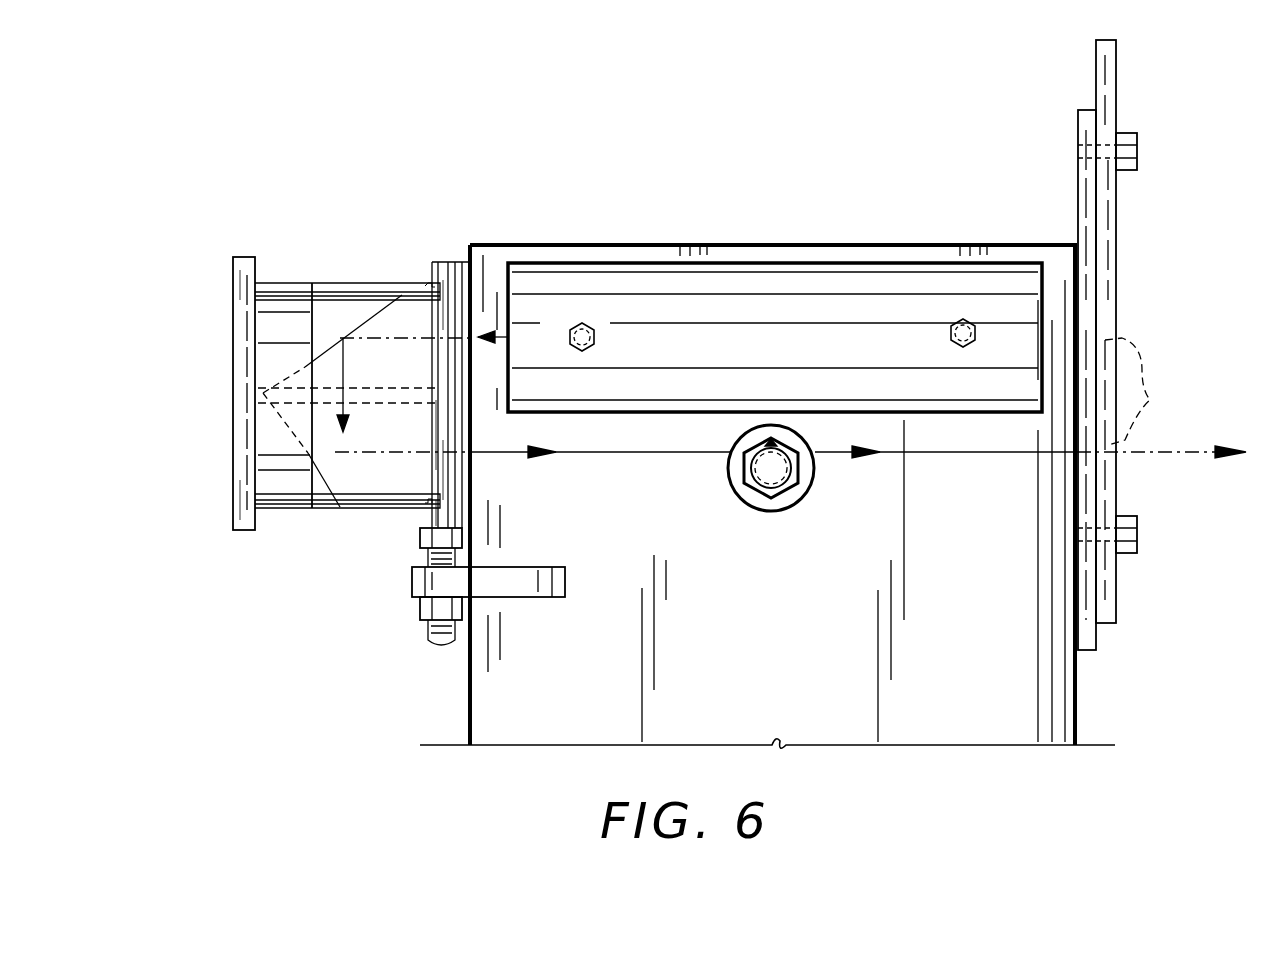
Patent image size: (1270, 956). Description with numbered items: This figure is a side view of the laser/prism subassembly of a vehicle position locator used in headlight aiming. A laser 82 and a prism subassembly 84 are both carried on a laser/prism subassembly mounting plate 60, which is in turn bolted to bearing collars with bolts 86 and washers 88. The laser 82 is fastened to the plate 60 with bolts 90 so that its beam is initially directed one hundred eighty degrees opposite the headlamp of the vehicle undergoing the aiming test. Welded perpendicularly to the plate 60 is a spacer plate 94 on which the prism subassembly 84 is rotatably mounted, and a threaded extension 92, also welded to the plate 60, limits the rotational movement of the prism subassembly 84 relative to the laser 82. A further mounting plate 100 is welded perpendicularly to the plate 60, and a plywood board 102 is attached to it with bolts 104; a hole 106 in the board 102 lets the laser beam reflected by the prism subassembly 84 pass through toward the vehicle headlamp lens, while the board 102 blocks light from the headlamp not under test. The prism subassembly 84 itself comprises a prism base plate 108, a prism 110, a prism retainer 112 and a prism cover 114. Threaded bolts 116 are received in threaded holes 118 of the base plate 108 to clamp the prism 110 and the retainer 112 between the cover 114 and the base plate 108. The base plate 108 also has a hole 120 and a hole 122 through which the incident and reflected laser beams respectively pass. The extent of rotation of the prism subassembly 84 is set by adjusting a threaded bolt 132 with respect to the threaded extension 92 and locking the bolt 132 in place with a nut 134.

The laser/prism subassembly mounting plate 60 is at (752, 646).
The laser 82 is at (762, 300).
The prism subassembly 84 is at (324, 226).
The bolts 86 is at (802, 470).
The washers 88 is at (766, 510).
The bolts 90 is at (596, 347).
The threaded extension 92 is at (412, 586).
The spacer plate 94 is at (460, 262).
The mounting plate 100 is at (1078, 190).
The plywood board 102 is at (1096, 75).
The bolts 104 is at (1130, 170).
The hole 106 is at (1156, 391).
The prism base plate 108 is at (440, 262).
The prism 110 is at (396, 386).
The prism retainer 112 is at (280, 312).
The prism cover 114 is at (232, 312).
The threaded bolts 116 is at (368, 257).
The threaded holes 118 is at (434, 518).
The hole 120 is at (485, 256).
The hole 122 is at (434, 486).
The threaded bolt 132 is at (420, 540).
The nut 134 is at (420, 614).